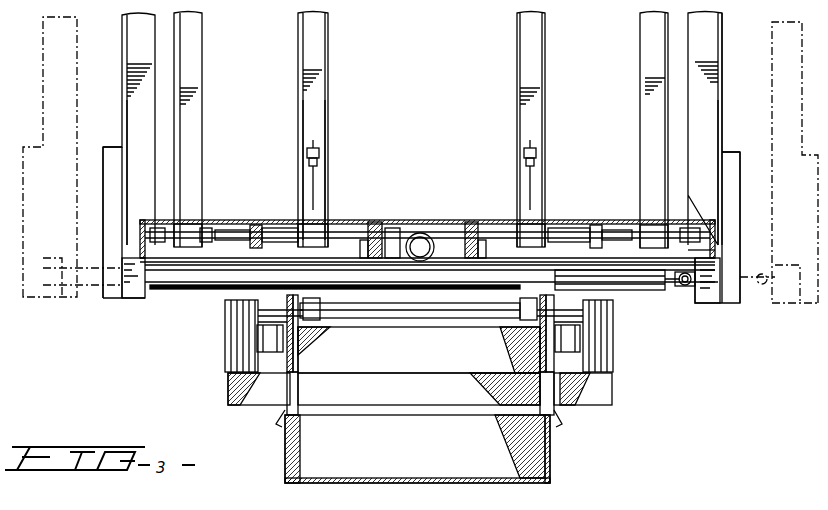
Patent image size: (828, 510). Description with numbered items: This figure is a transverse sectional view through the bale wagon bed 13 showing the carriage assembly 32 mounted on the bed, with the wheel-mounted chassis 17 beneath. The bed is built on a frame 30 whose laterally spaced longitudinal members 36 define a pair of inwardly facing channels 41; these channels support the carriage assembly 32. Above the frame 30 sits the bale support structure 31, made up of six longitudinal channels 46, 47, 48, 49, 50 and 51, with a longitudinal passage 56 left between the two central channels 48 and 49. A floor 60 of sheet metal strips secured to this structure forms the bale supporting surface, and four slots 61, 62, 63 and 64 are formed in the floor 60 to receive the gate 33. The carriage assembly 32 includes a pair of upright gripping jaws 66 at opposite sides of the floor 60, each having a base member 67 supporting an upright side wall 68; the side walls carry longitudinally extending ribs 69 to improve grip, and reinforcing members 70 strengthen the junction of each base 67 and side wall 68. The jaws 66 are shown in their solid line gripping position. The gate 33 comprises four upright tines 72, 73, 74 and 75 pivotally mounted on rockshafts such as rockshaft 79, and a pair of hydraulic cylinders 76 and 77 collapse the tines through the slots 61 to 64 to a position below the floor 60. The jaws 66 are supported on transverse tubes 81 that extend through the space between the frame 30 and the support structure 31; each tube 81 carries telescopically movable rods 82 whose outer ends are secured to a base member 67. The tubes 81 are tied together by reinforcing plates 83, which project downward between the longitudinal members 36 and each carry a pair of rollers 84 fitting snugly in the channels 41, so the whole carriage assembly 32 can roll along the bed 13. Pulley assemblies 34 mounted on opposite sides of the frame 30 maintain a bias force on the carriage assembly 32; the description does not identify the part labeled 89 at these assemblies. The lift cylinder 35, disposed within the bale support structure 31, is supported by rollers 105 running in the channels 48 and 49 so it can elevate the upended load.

The bale wagon bed 13 is at (750, 393).
The chassis 17 is at (552, 450).
The frame 30 is at (565, 322).
The bale support structure 31 is at (722, 252).
The carriage assembly 32 is at (358, 322).
The gate 33 is at (340, 90).
The pulley assembly 34 is at (622, 352).
The lift cylinder 35 is at (421, 233).
The longitudinal member 36 is at (300, 340).
The inwardly facing channel 41 is at (286, 324).
The longitudinal channel 46 is at (122, 237).
The longitudinal channel 47 is at (261, 222).
The longitudinal channel 48 is at (378, 222).
The longitudinal channel 49 is at (468, 229).
The longitudinal channel 50 is at (592, 238).
The longitudinal channel 51 is at (718, 240).
The longitudinal passage 56 is at (376, 250).
The floor 60 is at (248, 220).
The slot 61 is at (672, 224).
The slot 62 is at (553, 224).
The slot 63 is at (330, 224).
The slot 64 is at (212, 220).
The gripping jaw 66 is at (135, 62).
The base member 67 is at (138, 290).
The side wall 68 is at (122, 100).
The rib 69 is at (145, 146).
The reinforcing member 70 is at (108, 192).
The upright tine 72 is at (658, 60).
The upright tine 73 is at (540, 106).
The upright tine 74 is at (316, 124).
The upright tine 75 is at (190, 78).
The hydraulic cylinder 76 is at (536, 198).
The hydraulic cylinder 77 is at (316, 198).
The rockshaft 79 is at (217, 237).
The tube 81 is at (218, 275).
The rod 82 is at (100, 286).
The reinforcing plate 83 is at (320, 303).
The roller 84 is at (283, 341).
The pulley 89 is at (210, 352).
The roller 105 is at (385, 240).